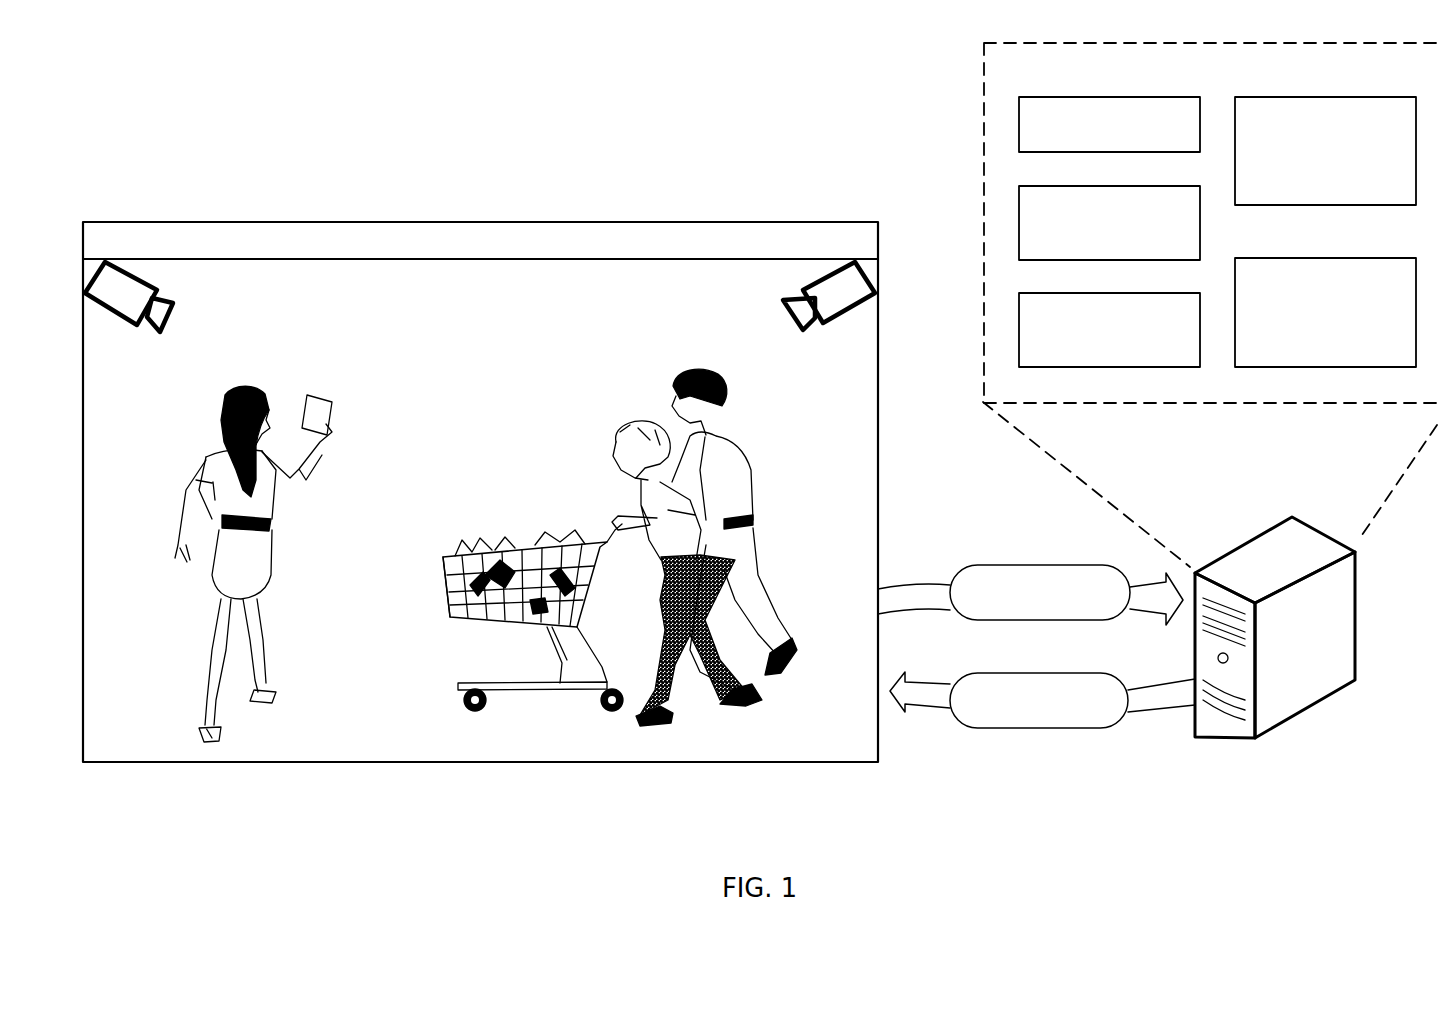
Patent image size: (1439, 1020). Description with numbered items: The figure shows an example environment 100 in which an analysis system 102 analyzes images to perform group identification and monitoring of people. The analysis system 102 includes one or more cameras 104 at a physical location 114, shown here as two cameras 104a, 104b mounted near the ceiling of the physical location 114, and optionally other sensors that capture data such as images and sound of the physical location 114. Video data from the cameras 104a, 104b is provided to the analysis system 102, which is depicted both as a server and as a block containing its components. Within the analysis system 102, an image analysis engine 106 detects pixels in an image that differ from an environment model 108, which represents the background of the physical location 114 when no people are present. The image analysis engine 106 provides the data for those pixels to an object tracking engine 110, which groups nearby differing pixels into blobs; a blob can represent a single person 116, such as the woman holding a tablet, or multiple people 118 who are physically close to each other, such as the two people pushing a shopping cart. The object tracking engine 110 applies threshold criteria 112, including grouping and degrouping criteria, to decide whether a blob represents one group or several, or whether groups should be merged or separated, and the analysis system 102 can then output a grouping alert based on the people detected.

The environment 100 is at (186, 72).
The analysis system 102 is at (1158, 390).
The cameras 104 is at (1109, 124).
The camera 104a is at (158, 333).
The camera 104b is at (803, 333).
The image analysis engine 106 is at (1325, 151).
The environment model 108 is at (1109, 223).
The object tracking engine 110 is at (1325, 312).
The threshold criteria 112 is at (1109, 330).
The physical location 114 is at (478, 222).
The person 116 is at (206, 460).
The multiple people 118 is at (753, 447).